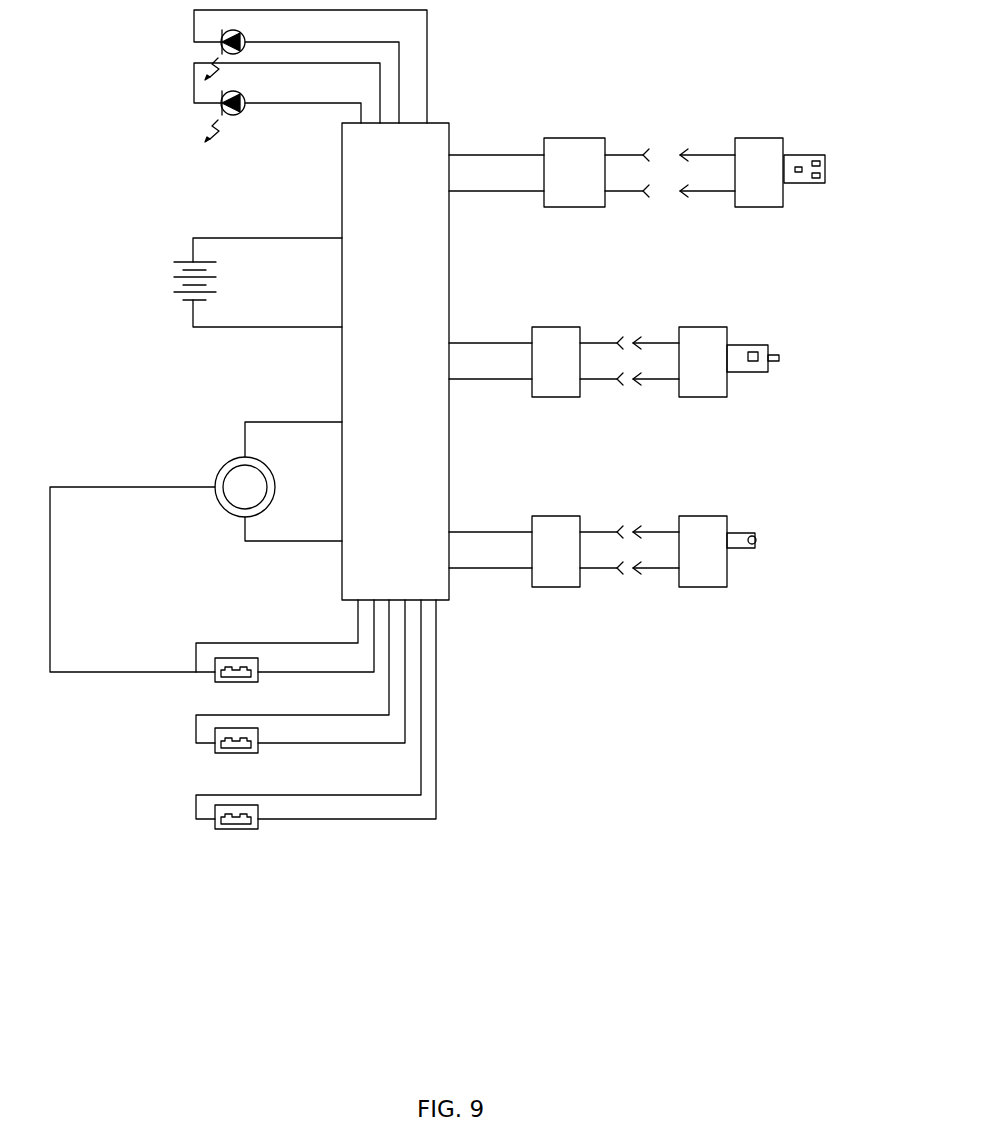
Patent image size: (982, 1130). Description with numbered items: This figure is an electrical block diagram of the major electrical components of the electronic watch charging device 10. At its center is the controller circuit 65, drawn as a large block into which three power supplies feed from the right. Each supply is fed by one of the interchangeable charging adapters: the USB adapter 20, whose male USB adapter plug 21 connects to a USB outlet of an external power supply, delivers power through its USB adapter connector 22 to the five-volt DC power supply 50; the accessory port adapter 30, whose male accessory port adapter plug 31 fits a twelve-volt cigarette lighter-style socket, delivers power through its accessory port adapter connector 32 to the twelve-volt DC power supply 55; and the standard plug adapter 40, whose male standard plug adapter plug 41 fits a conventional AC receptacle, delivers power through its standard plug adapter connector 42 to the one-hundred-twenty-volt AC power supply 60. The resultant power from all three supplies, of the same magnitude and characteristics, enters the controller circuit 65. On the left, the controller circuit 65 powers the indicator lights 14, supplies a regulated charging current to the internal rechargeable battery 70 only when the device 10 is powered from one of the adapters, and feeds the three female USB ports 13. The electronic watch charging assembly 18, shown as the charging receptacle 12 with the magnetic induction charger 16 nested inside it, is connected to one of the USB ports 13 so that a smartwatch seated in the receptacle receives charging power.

The device 10 is at (296, 912).
The charging receptacle 12 is at (226, 465).
The female USB ports 13 is at (211, 676).
The indicator light 14 is at (203, 45).
The magnetic induction charger 16 is at (231, 507).
The electronic watch charging assembly 18 is at (207, 485).
The USB adapter 20 is at (773, 196).
The male USB adapter plug 21 is at (826, 157).
The USB adapter connector 22 is at (668, 148).
The accessory port adapter 30 is at (712, 380).
The male accessory port adapter plug 31 is at (765, 353).
The accessory port adapter connector 32 is at (653, 341).
The standard plug adapter 40 is at (727, 567).
The male standard plug adapter plug 41 is at (756, 540).
The standard plug adapter connector 42 is at (632, 520).
The 5-VDC power supply 50 is at (583, 153).
The 12-VDC power supply 55 is at (565, 342).
The 120-VAC power supply 60 is at (565, 537).
The controller circuit 65 is at (405, 148).
The internal rechargeable battery 70 is at (175, 262).